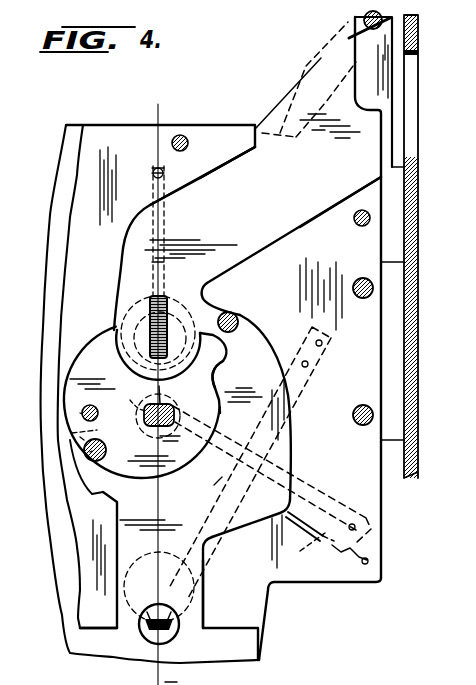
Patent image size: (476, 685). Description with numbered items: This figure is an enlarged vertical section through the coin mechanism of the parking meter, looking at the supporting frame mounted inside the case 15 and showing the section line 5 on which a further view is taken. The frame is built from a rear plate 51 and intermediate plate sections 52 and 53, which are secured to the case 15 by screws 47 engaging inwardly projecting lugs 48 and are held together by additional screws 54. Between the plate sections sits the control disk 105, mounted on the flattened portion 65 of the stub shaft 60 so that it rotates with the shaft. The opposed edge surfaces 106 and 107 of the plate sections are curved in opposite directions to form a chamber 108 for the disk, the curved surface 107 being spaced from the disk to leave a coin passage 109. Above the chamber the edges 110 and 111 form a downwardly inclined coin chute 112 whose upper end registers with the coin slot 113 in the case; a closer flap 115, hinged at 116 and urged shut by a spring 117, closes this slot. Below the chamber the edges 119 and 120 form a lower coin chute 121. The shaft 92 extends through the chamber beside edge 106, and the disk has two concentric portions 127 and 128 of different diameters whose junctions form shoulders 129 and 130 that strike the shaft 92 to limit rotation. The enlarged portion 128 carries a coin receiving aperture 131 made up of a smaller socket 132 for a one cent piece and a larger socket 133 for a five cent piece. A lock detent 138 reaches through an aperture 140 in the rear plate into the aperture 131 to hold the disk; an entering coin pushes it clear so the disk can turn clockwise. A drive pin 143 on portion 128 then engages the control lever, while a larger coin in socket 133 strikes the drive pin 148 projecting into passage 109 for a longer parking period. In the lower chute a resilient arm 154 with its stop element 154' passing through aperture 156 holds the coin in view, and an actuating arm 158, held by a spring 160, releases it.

The section line 5— 5 is at (159, 383).
The case 15 is at (421, 61).
The screws 47 is at (375, 294).
The lugs 48 is at (395, 288).
The rear plate 51 is at (62, 216).
The plate section 52 is at (72, 283).
The plate section 53 is at (372, 503).
The additional screws 54 is at (185, 136).
The stub shaft 60 is at (177, 410).
The flattened portion 65 is at (161, 392).
The shaft 92 is at (90, 452).
The control disk 105 is at (211, 381).
The edge surface 106 is at (80, 437).
The curved surface 107 is at (300, 445).
The chamber 108 is at (107, 492).
The coin passage 109 is at (250, 458).
The edge 110 is at (209, 174).
The edge 111 is at (304, 223).
The coin chute 112 is at (290, 187).
The coin slot 113 is at (410, 121).
The closer flap 115 is at (328, 100).
The hinge connection 116 is at (358, 12).
The spring 117 is at (303, 79).
The edge 119 is at (108, 615).
The edge 120 is at (213, 606).
The coin chute 121 is at (196, 620).
The concentric portion 127 is at (201, 492).
The enlarged portion 128 is at (105, 330).
The shoulder 129 is at (38, 460).
The shoulder 130 is at (236, 367).
The coin receiving aperture 131 is at (222, 298).
The coin socket 132 is at (125, 398).
The coin socket 133 is at (112, 381).
The lock detent 138 is at (170, 298).
The aperture 140 is at (150, 300).
The drive pin 143 is at (80, 413).
The drive pin 148 is at (241, 318).
The resilient arm 154 is at (267, 463).
The stop element 154' is at (194, 664).
The aperture 156 is at (165, 670).
The actuating arm 158 is at (272, 474).
The spring 160 is at (320, 542).